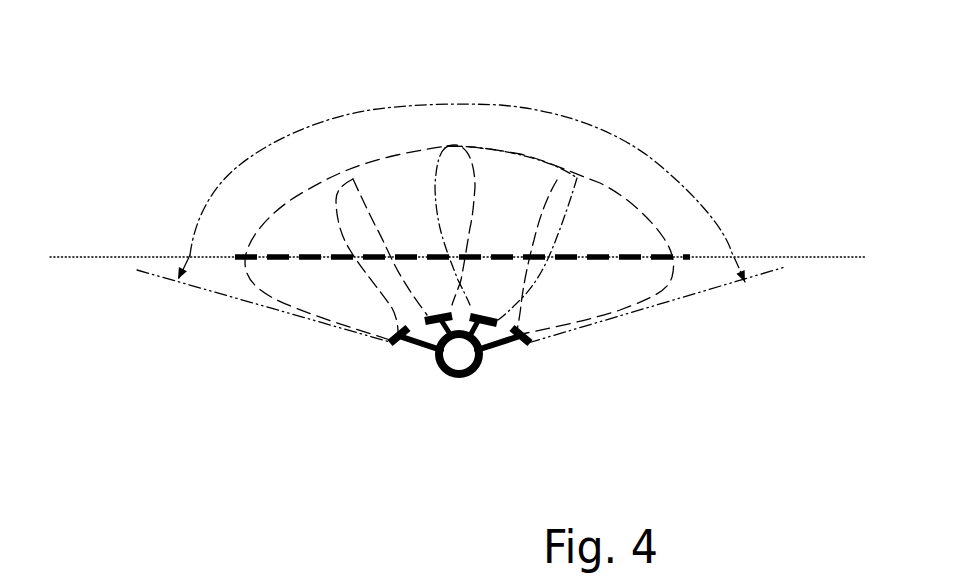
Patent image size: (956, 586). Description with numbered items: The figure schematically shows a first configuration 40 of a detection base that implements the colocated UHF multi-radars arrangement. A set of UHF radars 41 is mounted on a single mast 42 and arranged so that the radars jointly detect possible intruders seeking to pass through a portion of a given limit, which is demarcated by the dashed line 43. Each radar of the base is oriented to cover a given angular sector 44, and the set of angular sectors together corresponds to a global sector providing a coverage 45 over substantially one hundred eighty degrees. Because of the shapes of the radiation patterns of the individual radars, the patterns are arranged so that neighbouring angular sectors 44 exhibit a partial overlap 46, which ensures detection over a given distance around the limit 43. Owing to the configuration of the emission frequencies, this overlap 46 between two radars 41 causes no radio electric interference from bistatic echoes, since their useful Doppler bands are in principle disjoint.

The first configuration of base 40 is at (448, 411).
The UHF radars 41 is at (395, 444).
The mast 42 is at (491, 388).
The dashed line 43 is at (473, 205).
The angular sector 44 is at (381, 177).
The coverage 45 is at (461, 175).
The partial overlap 46 is at (537, 190).